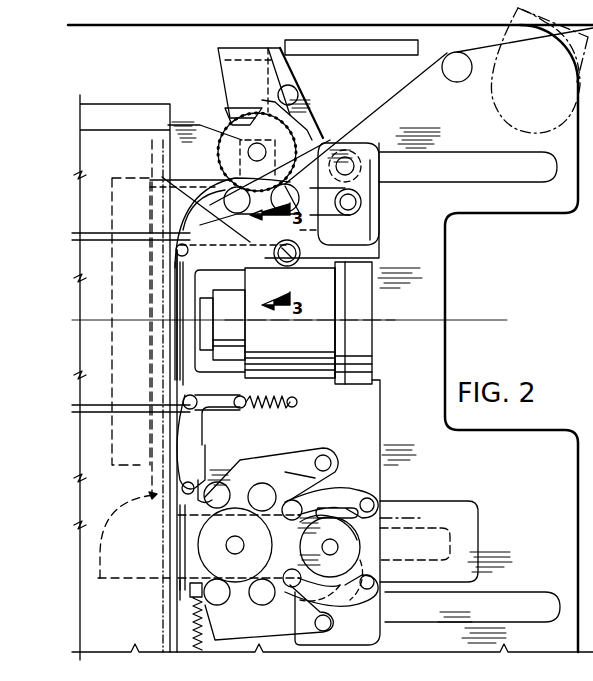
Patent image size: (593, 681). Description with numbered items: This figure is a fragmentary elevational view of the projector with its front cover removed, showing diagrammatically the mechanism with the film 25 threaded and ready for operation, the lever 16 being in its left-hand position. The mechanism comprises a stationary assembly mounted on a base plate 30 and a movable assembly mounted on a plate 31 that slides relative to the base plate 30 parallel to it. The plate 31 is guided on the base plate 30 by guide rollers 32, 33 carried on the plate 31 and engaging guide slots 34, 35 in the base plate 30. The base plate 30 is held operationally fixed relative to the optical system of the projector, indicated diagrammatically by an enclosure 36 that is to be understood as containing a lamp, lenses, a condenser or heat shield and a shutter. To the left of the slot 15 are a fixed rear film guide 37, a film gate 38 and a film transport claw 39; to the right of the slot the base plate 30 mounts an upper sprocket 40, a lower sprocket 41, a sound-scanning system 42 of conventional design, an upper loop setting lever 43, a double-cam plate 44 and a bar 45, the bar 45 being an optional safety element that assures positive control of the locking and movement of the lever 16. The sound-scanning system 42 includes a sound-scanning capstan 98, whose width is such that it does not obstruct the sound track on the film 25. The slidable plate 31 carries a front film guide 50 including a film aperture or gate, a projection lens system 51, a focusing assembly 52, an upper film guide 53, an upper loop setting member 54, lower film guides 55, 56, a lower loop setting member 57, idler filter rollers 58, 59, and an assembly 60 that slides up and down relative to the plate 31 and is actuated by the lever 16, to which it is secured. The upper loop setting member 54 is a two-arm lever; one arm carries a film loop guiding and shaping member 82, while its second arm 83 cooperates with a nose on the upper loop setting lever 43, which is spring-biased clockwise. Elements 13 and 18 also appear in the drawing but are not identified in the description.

The paper roll 13 is at (539, 141).
The slot 15 is at (168, 611).
The lever 16 is at (218, 62).
The idler roller 18 is at (455, 75).
The film 25 is at (190, 190).
The base plate 30 is at (440, 355).
The plate 31 is at (380, 436).
The guide roller 32 is at (378, 152).
The guide roller 33 is at (385, 640).
The guide slot 34 is at (465, 182).
The guide slot 35 is at (500, 596).
The enclosure 36 is at (105, 135).
The fixed rear film guide 37 is at (175, 300).
The film gate 38 is at (166, 330).
The film transport claw 39 is at (182, 355).
The upper sprocket 40 is at (218, 145).
The lower sprocket 41 is at (200, 557).
The sound-scanning system 42 is at (373, 528).
The upper loop setting lever 43 is at (222, 118).
The double-cam plate 44 is at (467, 552).
The bar 45 is at (326, 50).
The front film guide 50 is at (185, 268).
The projection lens system 51 is at (310, 368).
The focusing assembly 52 is at (300, 248).
The upper film guide 53 is at (362, 220).
The upper loop setting member 54 is at (205, 227).
The lower film guide 55 is at (264, 462).
The lower film guide 56 is at (260, 630).
The lower loop setting member 57 is at (200, 447).
The idler filter roller 58 is at (352, 492).
The idler filter roller 59 is at (385, 610).
The assembly 60 is at (386, 230).
The film loop guiding and shaping member 82 is at (195, 210).
The second arm 83 is at (327, 133).
The sound-scanning capstan 98 is at (352, 562).